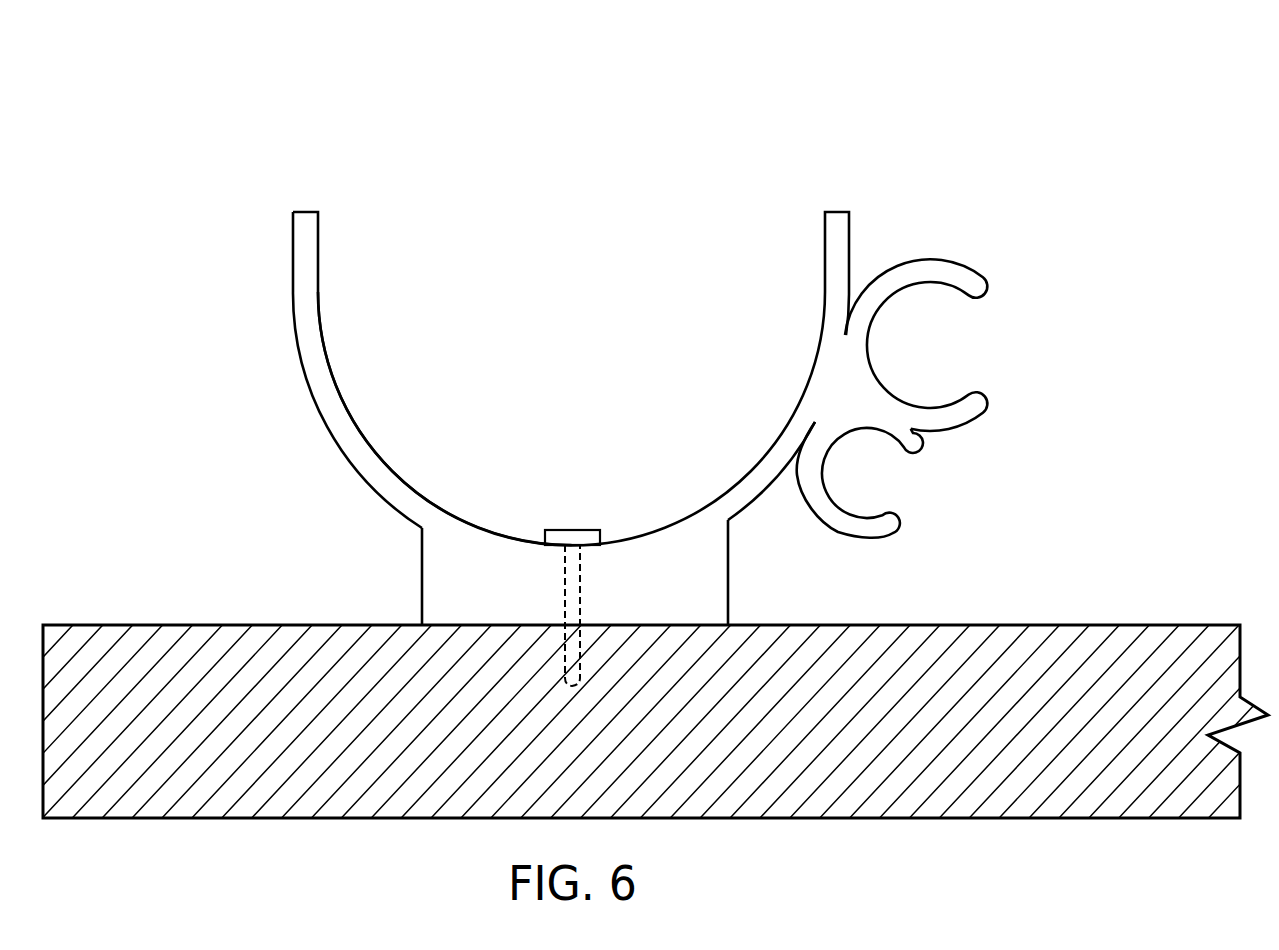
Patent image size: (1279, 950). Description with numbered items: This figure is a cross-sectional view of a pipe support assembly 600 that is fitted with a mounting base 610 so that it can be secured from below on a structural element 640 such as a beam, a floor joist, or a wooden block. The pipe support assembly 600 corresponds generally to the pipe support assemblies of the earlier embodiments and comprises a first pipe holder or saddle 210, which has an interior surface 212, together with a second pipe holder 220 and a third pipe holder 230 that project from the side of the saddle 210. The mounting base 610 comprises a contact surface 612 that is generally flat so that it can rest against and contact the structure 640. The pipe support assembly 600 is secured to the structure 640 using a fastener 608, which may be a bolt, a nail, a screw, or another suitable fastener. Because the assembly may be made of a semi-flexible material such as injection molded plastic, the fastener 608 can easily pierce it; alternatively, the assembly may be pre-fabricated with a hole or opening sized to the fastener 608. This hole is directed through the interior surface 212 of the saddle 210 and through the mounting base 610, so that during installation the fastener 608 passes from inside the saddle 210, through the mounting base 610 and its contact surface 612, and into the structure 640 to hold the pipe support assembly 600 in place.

The pipe support assembly 600 is at (992, 123).
The first pipe holder or saddle 210 is at (290, 411).
The interior surface 212 is at (358, 432).
The second pipe holder 220 is at (965, 263).
The third pipe holder 230 is at (895, 518).
The fastener 608 is at (582, 530).
The mounting base 610 is at (728, 593).
The contact surface 612 is at (453, 625).
The structural element 640 is at (1102, 626).